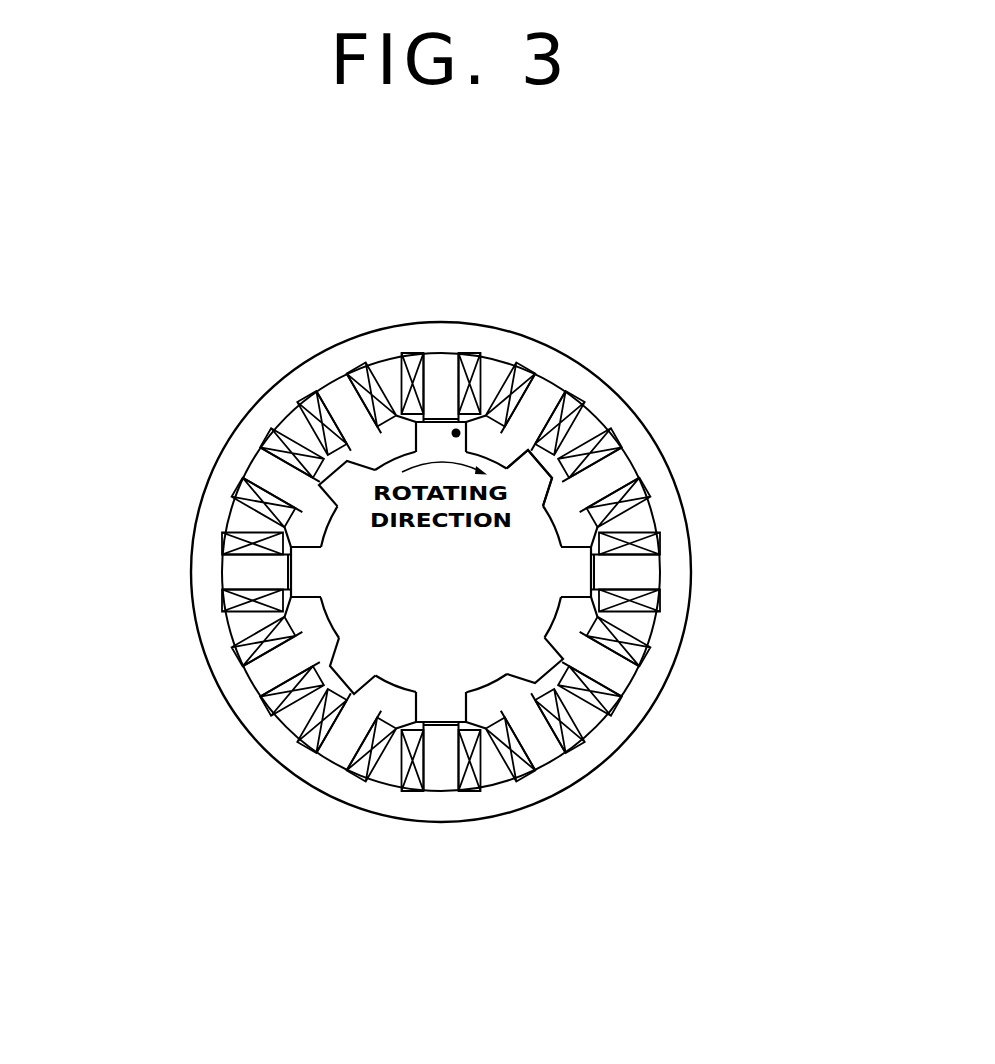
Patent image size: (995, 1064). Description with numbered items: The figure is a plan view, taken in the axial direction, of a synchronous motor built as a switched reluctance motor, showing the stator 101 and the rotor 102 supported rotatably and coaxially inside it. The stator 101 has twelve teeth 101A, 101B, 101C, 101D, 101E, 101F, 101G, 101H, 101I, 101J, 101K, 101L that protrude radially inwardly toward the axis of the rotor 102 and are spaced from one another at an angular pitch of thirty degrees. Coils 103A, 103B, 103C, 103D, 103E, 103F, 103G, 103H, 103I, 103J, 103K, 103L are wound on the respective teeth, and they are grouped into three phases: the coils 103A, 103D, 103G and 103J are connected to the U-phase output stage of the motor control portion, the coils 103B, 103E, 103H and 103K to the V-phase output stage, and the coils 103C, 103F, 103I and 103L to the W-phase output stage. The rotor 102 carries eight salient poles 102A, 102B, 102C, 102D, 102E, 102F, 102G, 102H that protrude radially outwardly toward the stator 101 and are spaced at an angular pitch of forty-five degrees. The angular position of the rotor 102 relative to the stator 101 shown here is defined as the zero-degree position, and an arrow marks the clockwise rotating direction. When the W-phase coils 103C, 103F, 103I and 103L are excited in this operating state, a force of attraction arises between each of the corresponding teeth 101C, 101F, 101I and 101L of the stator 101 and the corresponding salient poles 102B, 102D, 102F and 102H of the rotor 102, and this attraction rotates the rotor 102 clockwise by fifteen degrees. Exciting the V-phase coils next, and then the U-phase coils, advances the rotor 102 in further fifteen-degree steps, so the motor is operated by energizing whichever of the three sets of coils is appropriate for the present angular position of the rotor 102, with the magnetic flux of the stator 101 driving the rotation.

The stator 101 is at (515, 352).
The tooth 101A is at (443, 387).
The tooth 101B is at (534, 412).
The tooth 101C is at (618, 476).
The tooth 101D is at (635, 572).
The tooth 101E is at (607, 668).
The tooth 101F is at (540, 743).
The tooth 101G is at (437, 762).
The tooth 101H is at (345, 734).
The tooth 101I is at (258, 668).
The tooth 101J is at (245, 569).
The tooth 101K is at (274, 478).
The tooth 101L is at (345, 405).
The rotor 102 is at (600, 456).
The salient pole 102A is at (428, 420).
The salient pole 102B is at (553, 458).
The salient pole 102C is at (580, 543).
The salient pole 102D is at (525, 668).
The salient pole 102E is at (486, 768).
The salient pole 102F is at (345, 692).
The salient pole 102G is at (312, 575).
The salient pole 102H is at (348, 460).
The coil 103A is at (405, 367).
The coil 103B is at (535, 387).
The coil 103C is at (612, 440).
The coil 103D is at (657, 540).
The coil 103E is at (633, 655).
The coil 103F is at (568, 740).
The coil 103G is at (470, 789).
The coil 103H is at (352, 773).
The coil 103I is at (273, 698).
The coil 103J is at (225, 540).
The coil 103K is at (258, 470).
The coil 103L is at (318, 400).